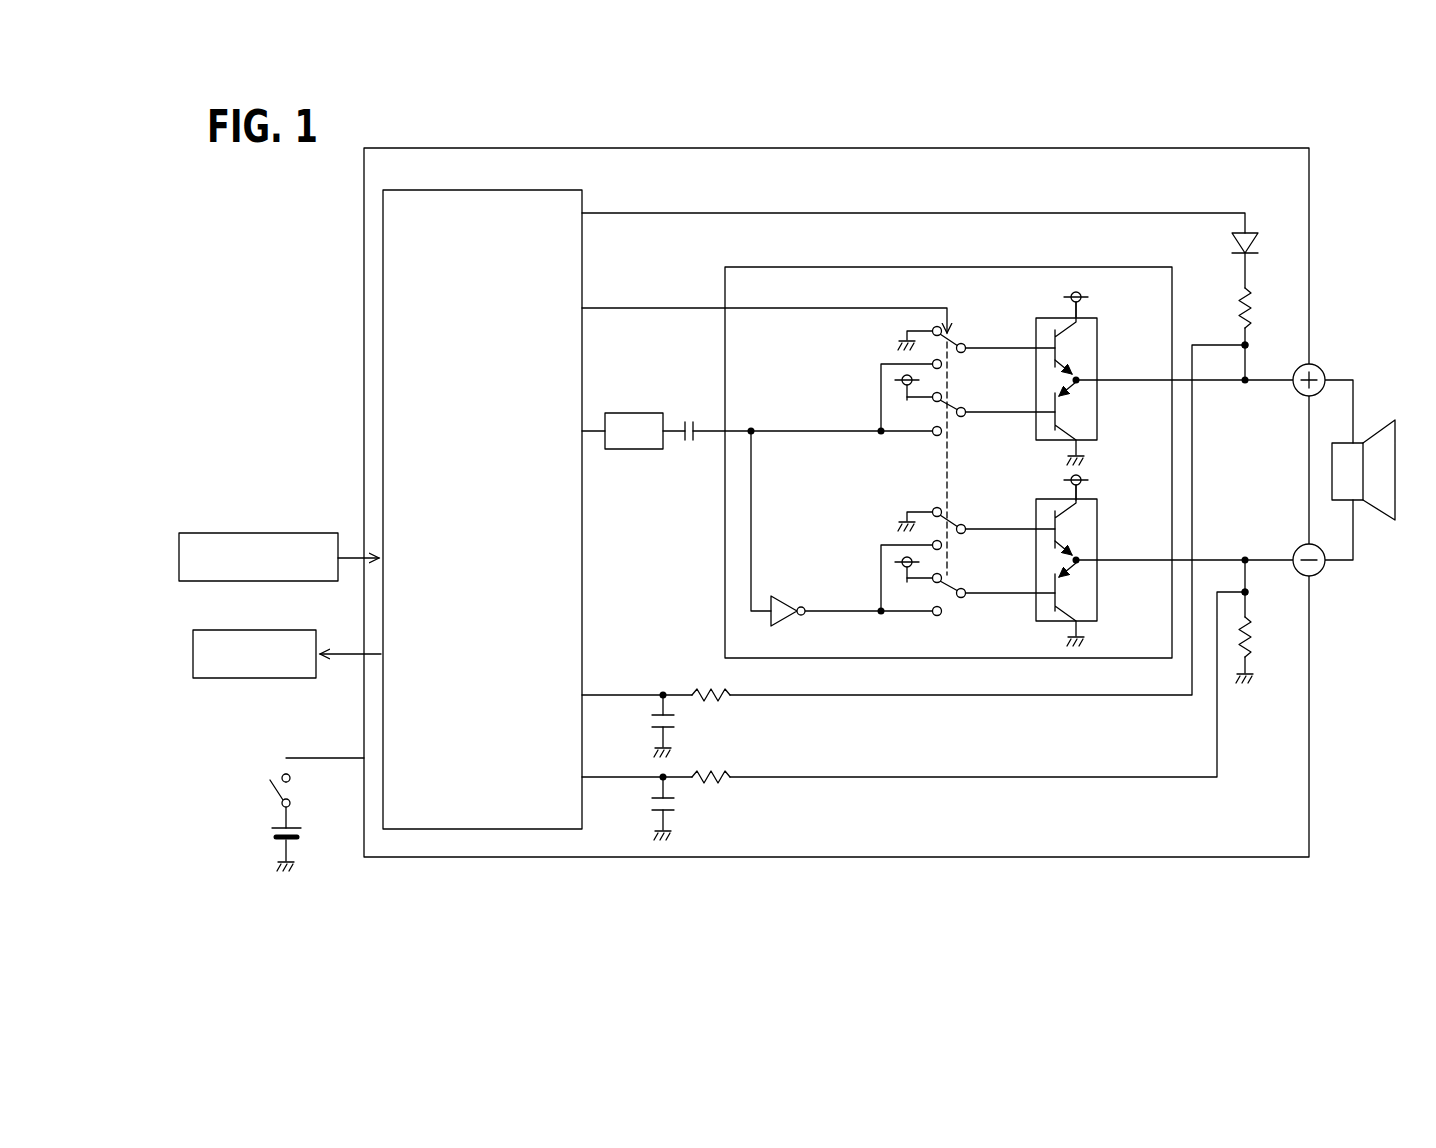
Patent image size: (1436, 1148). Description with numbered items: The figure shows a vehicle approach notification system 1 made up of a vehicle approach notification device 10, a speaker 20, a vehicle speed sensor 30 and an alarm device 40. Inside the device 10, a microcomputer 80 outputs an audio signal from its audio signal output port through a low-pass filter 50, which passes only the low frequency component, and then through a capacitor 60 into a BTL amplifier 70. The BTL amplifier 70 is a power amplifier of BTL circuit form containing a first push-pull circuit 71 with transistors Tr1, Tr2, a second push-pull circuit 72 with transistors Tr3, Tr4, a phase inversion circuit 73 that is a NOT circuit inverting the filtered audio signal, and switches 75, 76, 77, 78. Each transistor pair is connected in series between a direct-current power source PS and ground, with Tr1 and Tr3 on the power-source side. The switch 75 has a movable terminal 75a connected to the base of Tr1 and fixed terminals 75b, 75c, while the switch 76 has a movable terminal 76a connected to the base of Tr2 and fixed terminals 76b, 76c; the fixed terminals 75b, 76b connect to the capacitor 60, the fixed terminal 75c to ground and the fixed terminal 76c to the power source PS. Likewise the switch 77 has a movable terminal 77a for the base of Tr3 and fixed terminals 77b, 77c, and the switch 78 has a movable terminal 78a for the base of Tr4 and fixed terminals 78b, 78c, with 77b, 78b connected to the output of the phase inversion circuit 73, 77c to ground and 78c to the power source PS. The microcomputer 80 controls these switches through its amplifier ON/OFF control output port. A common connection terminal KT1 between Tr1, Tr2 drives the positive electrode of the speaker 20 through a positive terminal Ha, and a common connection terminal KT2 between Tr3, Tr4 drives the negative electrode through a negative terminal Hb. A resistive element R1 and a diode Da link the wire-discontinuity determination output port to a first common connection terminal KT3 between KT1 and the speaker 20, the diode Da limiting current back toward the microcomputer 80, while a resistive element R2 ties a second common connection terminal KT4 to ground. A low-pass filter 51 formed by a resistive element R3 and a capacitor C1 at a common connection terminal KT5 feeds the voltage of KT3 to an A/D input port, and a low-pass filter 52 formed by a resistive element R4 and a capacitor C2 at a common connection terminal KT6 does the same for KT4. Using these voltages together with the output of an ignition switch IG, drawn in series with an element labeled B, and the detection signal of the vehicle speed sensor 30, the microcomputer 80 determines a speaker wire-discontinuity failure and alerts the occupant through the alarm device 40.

The vehicle approach notification system 1 is at (240, 876).
The vehicle approach notification device 10 is at (1099, 147).
The speaker 20 is at (1375, 426).
The vehicle speed sensor 30 is at (222, 533).
The alarm device 40 is at (222, 630).
The low-pass filter 50 is at (634, 411).
The low-pass filter 51 is at (692, 694).
The low-pass filter 52 is at (689, 784).
The capacitor 60 is at (690, 421).
The BTL amplifier 70 is at (822, 267).
The push-pull circuit 71 is at (1040, 318).
The push-pull circuit 72 is at (1100, 621).
The phase inversion circuit 73 is at (785, 622).
The switch 75 is at (933, 325).
The movable terminal 75a is at (966, 346).
The fixed terminal 75b is at (942, 364).
The fixed terminal 75c is at (932, 331).
The switch 76 is at (940, 426).
The movable terminal 76a is at (964, 416).
The fixed terminal 76b is at (933, 434).
The fixed terminal 76c is at (942, 397).
The switch 77 is at (933, 517).
The movable terminal 77a is at (966, 528).
The fixed terminal 77b is at (942, 545).
The fixed terminal 77c is at (932, 512).
The switch 78 is at (940, 608).
The movable terminal 78a is at (964, 597).
The fixed terminal 78b is at (933, 614).
The fixed terminal 78c is at (942, 578).
The microcomputer 80 is at (585, 201).
The transistor Tr1 is at (1068, 355).
The transistor Tr2 is at (1069, 424).
The transistor Tr3 is at (1068, 536).
The transistor Tr4 is at (1069, 605).
The common connection terminal KT1 is at (1079, 378).
The common connection terminal KT2 is at (1079, 559).
The first common connection terminal KT3 is at (1245, 384).
The second common connection terminal KT4 is at (1245, 557).
The common connection terminal KT5 is at (664, 692).
The common connection terminal KT6 is at (660, 775).
The resistive element R1 is at (1251, 312).
The resistive element R2 is at (1250, 636).
The resistive element R3 is at (730, 690).
The resistive element R4 is at (730, 772).
The capacitor C1 is at (652, 716).
The capacitor C2 is at (652, 799).
The diode Da is at (1247, 232).
The positive terminal Ha is at (1316, 365).
The negative terminal Hb is at (1318, 576).
The direct-current power source PS is at (901, 380).
The ignition switch IG is at (270, 796).
The battery B is at (302, 834).